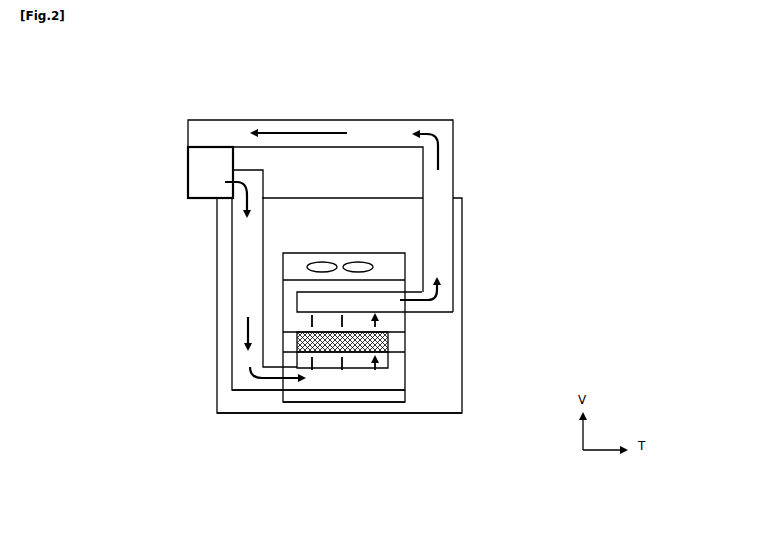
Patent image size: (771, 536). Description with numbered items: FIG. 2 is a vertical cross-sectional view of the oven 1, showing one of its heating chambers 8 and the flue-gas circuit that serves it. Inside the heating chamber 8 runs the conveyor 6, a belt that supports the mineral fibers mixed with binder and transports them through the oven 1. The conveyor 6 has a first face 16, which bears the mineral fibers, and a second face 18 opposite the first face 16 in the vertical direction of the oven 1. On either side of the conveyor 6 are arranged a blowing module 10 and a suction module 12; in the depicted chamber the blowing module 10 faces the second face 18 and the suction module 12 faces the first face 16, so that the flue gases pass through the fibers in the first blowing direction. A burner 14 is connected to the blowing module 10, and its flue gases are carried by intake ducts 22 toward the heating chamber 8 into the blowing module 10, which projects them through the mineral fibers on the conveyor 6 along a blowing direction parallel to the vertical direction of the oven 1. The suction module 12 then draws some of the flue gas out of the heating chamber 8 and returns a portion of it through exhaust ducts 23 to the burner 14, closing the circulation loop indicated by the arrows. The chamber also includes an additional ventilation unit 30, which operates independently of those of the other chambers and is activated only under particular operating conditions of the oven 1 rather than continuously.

The oven 1 is at (500, 148).
The burner 14 is at (205, 147).
The exhaust ducts 23 is at (440, 217).
The intake ducts 22 is at (245, 233).
The additional ventilation unit 30 is at (283, 268).
The suction module 12 is at (317, 305).
The first face 16 is at (300, 327).
The conveyor 6 is at (393, 352).
The second face 18 is at (347, 360).
The blowing module 10 is at (300, 388).
The heating chamber 8 is at (339, 438).